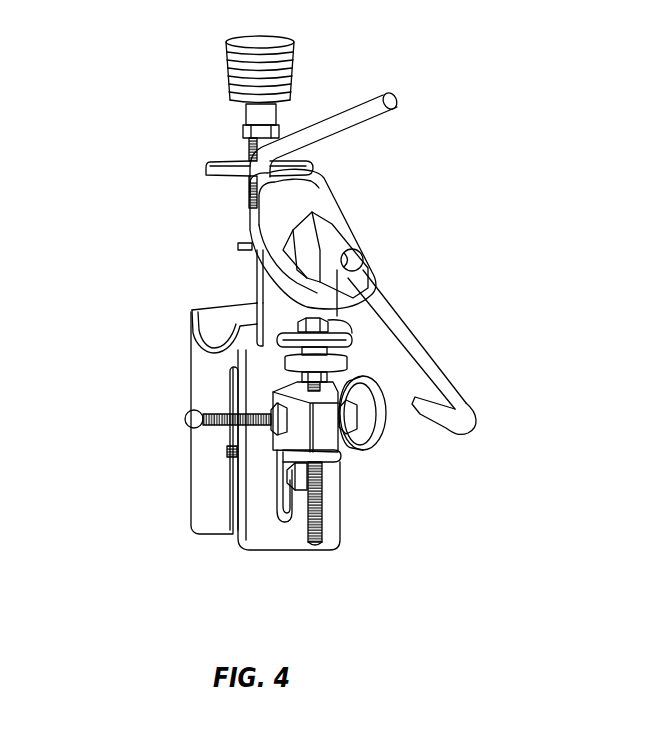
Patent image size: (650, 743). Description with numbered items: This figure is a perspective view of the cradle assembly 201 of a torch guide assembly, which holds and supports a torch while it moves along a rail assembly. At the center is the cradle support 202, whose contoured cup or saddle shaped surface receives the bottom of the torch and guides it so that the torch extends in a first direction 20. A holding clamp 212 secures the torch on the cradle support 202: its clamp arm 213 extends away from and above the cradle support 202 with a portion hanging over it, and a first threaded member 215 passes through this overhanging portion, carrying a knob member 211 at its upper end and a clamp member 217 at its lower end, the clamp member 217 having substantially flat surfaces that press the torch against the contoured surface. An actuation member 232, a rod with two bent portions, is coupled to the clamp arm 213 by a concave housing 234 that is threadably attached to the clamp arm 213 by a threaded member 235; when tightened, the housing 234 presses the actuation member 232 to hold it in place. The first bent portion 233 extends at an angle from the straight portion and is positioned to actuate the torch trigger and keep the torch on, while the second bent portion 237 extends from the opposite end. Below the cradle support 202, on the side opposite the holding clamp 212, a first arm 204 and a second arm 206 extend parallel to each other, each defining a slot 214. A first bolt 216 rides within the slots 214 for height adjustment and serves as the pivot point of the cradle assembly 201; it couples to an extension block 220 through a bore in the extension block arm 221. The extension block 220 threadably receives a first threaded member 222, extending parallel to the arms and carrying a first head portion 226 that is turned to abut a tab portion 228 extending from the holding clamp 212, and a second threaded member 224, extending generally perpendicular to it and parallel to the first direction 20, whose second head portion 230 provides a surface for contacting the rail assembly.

The first direction 20 is at (167, 347).
The cradle assembly 201 is at (497, 74).
The cradle support 202 is at (208, 314).
The first arm 204 is at (248, 550).
The second arm 206 is at (193, 495).
The knob member 211 is at (284, 68).
The holding clamp 212 is at (340, 178).
The clamp arm 213 is at (216, 166).
The slot 214 is at (232, 372).
The first threaded member 215 is at (258, 190).
The first bolt 216 is at (229, 450).
The clamp member 217 is at (240, 248).
The extension block 220 is at (333, 441).
The extension block arm 221 is at (327, 460).
The first threaded member 222 is at (312, 543).
The second threaded member 224 is at (204, 429).
The first head portion 226 is at (343, 363).
The tab portion 228 is at (330, 338).
The second head portion 230 is at (377, 442).
The actuation member 232 is at (390, 310).
The first bent portion 233 is at (433, 414).
The housing 234 is at (308, 186).
The threaded member 235 is at (347, 241).
The second bent portion 237 is at (354, 110).